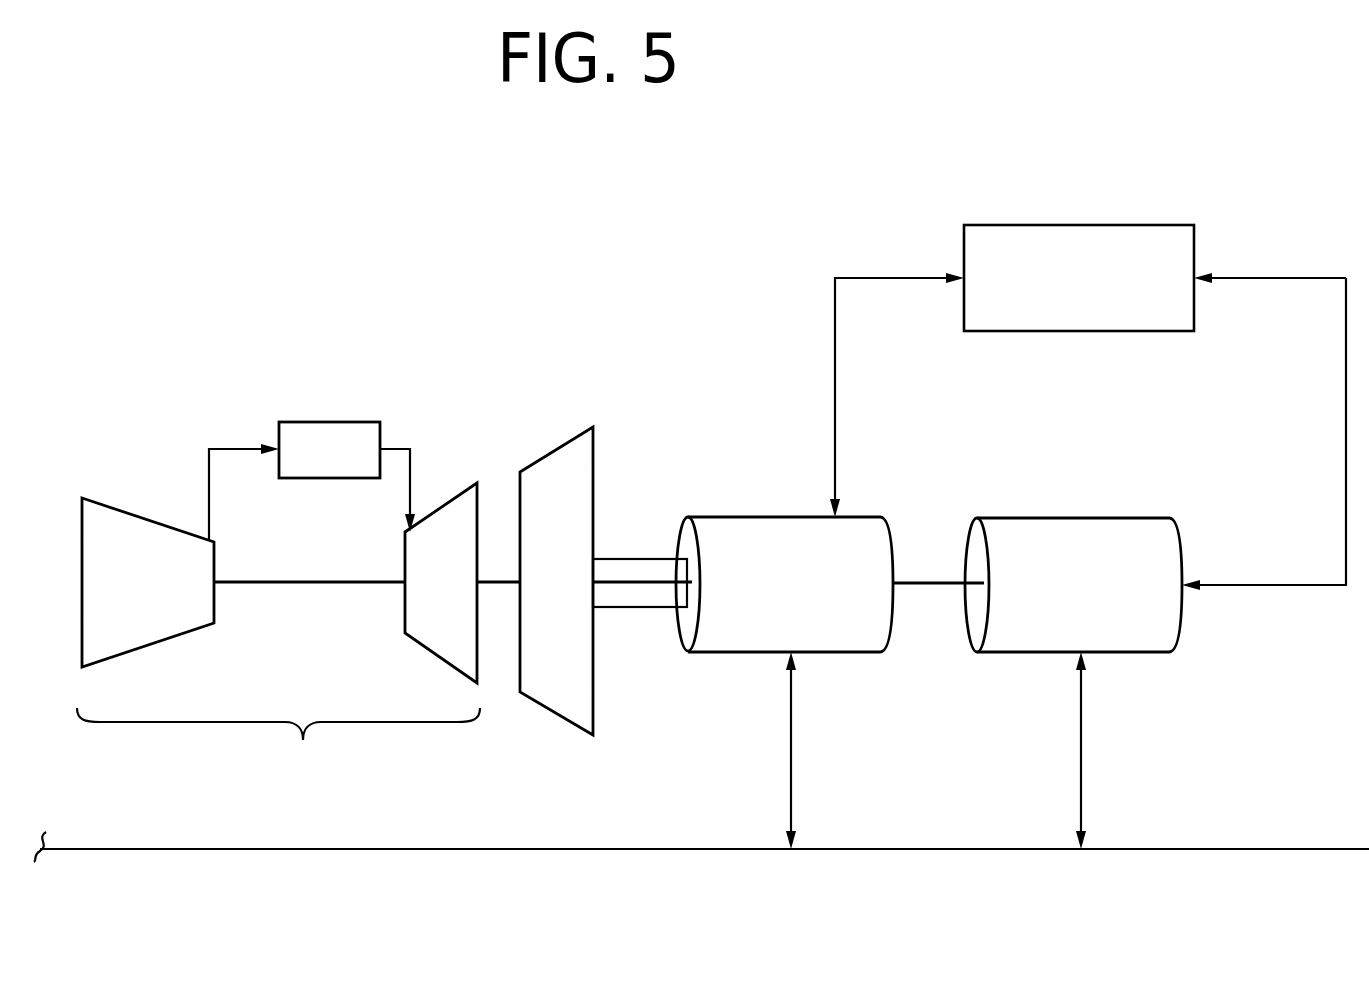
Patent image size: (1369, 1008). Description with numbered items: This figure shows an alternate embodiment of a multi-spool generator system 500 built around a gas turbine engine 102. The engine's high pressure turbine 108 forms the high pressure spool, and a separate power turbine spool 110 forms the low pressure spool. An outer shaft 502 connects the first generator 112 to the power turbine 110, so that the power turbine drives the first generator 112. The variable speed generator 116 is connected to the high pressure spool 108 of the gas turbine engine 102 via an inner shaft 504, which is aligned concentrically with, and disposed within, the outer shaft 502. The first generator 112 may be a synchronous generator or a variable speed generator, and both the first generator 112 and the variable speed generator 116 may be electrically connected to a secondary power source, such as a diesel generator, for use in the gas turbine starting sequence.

The system 500 is at (300, 245).
The gas turbine engine 102 is at (278, 597).
The high pressure turbine 108 is at (438, 507).
The power turbine spool 110 is at (543, 457).
The outer shaft 502 is at (635, 560).
The inner shaft 504 is at (295, 582).
The first generator 112 is at (870, 517).
The variable speed generator 116 is at (1182, 536).